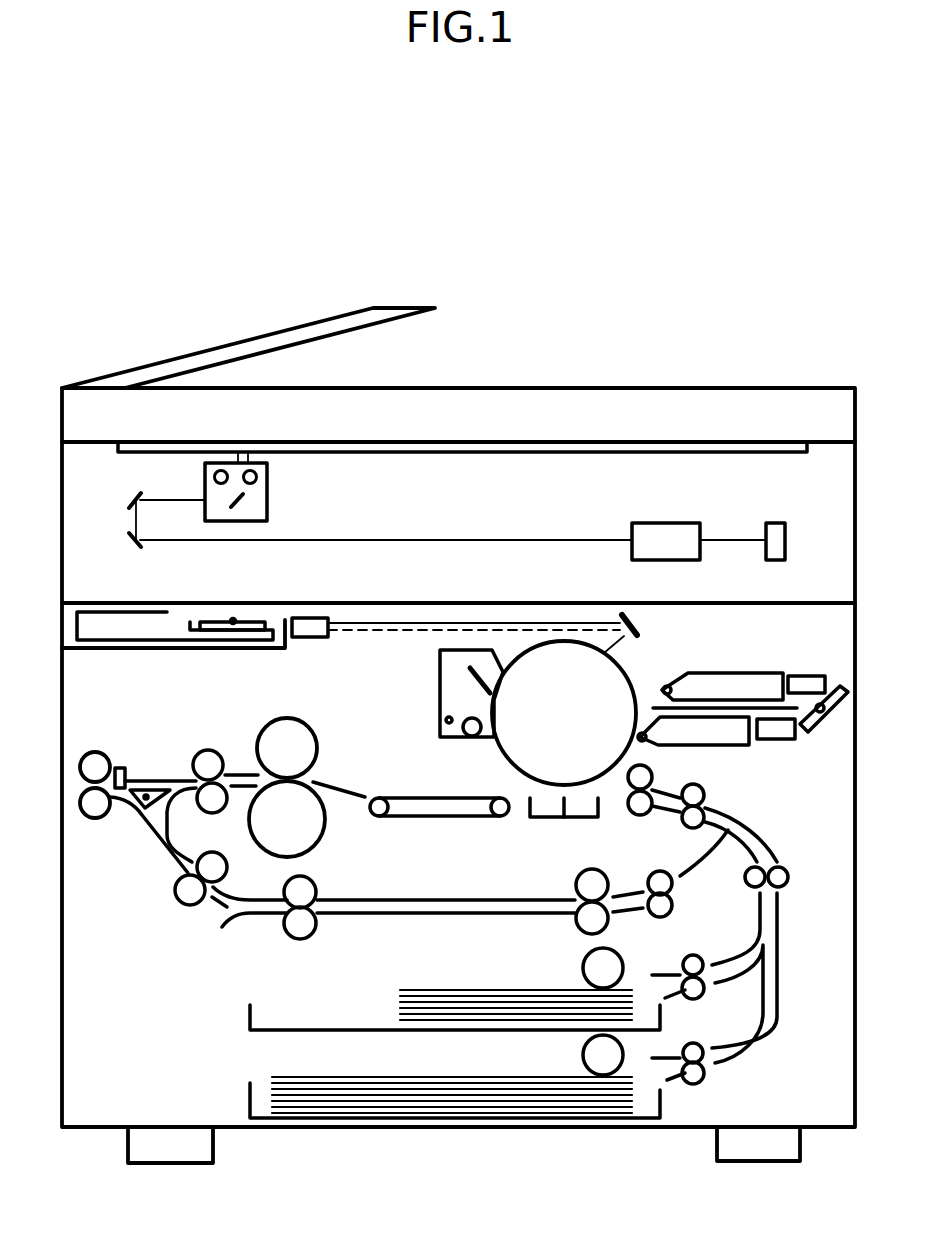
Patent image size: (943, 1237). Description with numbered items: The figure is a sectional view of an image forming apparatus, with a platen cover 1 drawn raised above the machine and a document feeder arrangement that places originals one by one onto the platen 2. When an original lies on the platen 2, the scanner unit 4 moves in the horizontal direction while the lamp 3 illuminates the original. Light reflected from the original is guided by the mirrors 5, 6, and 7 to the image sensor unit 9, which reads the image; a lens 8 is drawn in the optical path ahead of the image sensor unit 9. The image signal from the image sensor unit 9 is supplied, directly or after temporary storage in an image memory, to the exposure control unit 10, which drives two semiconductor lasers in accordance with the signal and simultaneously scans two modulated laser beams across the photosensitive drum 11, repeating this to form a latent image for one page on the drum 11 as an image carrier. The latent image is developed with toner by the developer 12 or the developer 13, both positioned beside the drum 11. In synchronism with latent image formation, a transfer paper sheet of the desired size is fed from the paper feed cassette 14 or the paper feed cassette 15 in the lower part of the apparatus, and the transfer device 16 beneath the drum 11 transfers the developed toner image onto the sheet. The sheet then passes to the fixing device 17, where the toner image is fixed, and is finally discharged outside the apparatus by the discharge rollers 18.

The platen cover 1 is at (219, 347).
The platen 2 is at (660, 442).
The lamp 3 is at (248, 462).
The scanner unit 4 is at (268, 477).
The mirror 5 is at (246, 504).
The mirror 6 is at (128, 500).
The mirror 7 is at (128, 540).
The imaging lens 8 is at (657, 523).
The image sensor unit 9 is at (773, 523).
The exposure control unit 10 is at (167, 603).
The photosensitive drum 11 is at (625, 690).
The developer 12 is at (735, 673).
The developer 13 is at (708, 744).
The paper feed cassette 14 is at (662, 1018).
The paper feed cassette 15 is at (662, 1108).
The transfer device 16 is at (588, 816).
The fixing device 17 is at (270, 733).
The discharge rollers 18 is at (95, 758).